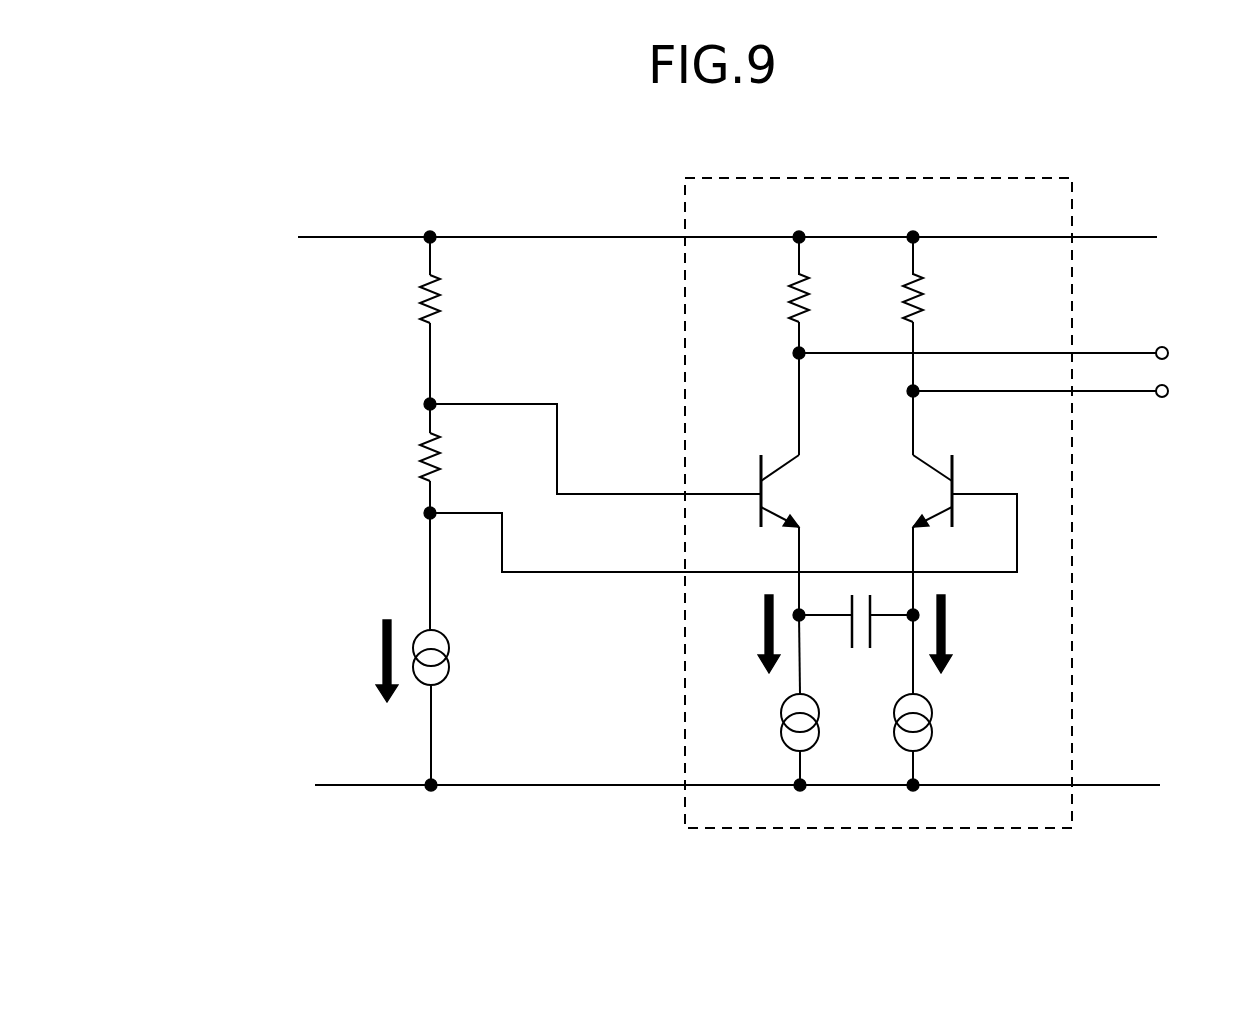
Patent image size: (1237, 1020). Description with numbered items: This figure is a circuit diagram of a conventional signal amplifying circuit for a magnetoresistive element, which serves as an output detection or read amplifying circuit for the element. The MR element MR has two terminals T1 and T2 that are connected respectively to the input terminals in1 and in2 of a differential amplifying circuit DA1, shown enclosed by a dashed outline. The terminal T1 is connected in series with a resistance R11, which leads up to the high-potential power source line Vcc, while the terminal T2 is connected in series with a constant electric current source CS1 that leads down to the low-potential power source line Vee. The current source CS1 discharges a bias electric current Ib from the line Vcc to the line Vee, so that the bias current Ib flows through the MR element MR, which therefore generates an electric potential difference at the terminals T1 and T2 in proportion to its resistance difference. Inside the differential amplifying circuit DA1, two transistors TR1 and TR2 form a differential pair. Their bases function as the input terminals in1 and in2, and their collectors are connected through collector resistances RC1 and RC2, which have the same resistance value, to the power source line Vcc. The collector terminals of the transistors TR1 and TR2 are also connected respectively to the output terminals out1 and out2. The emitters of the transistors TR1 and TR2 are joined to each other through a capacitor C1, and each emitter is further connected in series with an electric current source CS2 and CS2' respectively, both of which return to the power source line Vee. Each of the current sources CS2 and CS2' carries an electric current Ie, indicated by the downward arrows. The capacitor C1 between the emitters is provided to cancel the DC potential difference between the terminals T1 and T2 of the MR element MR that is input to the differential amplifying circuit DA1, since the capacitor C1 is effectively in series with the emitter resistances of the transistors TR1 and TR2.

The power source line at high potential Vcc is at (691, 243).
The power source line at low potential Vee is at (701, 784).
The resistance R11 is at (399, 320).
The terminal of the MR element T1 is at (424, 404).
The terminal of the MR element T2 is at (424, 513).
The MR element MR is at (402, 458).
The bias electric current Ib is at (367, 661).
The constant electric current source CS1 is at (466, 649).
The differential amplifying circuit DA1 is at (878, 486).
The collector resistance RC1 is at (765, 295).
The collector resistance RC2 is at (941, 314).
The output terminal out1 is at (1015, 352).
The output terminal out2 is at (1072, 390).
The input terminal in1 is at (736, 477).
The input terminal in2 is at (979, 477).
The transistor TR1 is at (799, 484).
The transistor TR2 is at (920, 503).
The electric current Ie is at (856, 634).
The capacitor C1 is at (856, 638).
The electric current source CS2 is at (768, 700).
The electric current source CS2' is at (949, 700).